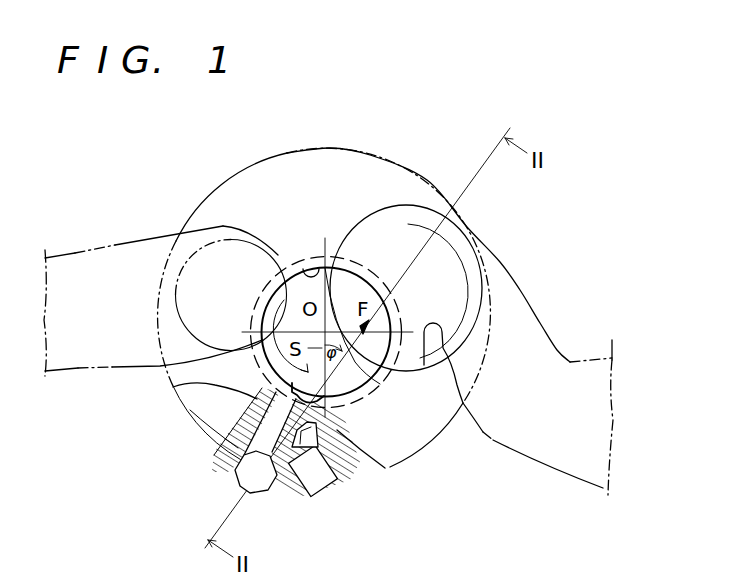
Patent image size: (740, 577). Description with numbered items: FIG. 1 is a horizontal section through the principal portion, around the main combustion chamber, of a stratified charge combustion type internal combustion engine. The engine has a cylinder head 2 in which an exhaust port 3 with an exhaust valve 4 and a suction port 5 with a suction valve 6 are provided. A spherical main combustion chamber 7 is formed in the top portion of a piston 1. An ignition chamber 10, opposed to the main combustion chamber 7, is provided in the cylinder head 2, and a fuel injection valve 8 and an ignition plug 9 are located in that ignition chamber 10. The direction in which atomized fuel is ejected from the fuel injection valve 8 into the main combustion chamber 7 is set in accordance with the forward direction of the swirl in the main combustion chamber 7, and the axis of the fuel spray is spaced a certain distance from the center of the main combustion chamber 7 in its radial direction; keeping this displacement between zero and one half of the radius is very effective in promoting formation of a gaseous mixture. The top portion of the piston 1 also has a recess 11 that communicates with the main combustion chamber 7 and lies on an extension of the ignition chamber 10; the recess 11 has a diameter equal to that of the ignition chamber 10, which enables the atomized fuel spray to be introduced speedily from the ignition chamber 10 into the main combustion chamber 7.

The piston 1 is at (428, 185).
The cylinder head 2 is at (173, 388).
The exhaust port 3 is at (145, 240).
The exhaust valve 4 is at (228, 238).
The suction port 5 is at (522, 290).
The suction valve 6 is at (398, 220).
The main combustion chamber 7 is at (311, 268).
The fuel injection valve 8 is at (255, 478).
The ignition plug 9 is at (320, 480).
The ignition chamber 10 is at (232, 437).
The recess 11 is at (378, 465).